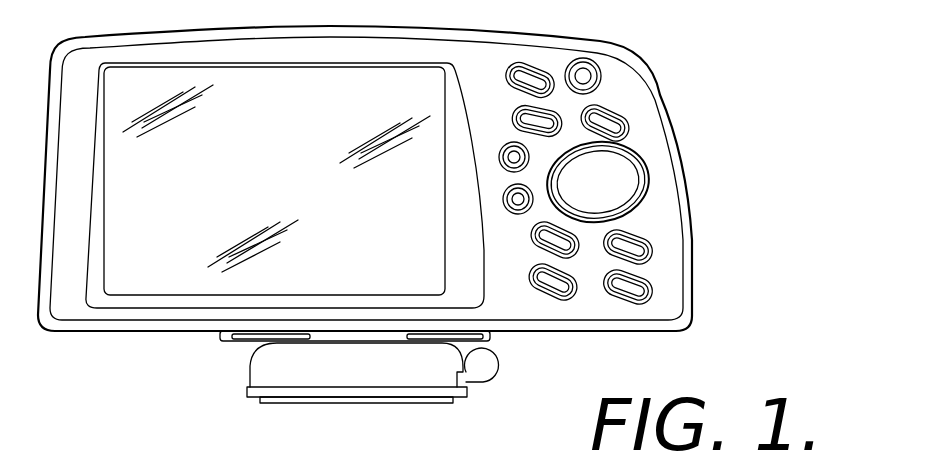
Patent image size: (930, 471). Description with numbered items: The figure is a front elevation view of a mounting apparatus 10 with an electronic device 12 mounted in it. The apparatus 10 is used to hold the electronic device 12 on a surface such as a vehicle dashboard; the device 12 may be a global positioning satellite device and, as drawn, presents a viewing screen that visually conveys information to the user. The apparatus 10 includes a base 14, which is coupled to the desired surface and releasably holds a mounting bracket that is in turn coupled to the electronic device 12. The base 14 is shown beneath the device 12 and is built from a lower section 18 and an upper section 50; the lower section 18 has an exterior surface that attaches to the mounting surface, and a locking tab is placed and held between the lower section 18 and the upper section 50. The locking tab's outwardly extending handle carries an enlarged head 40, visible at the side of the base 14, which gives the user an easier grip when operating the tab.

The mounting apparatus 10 is at (493, 343).
The electronic device 12 is at (686, 160).
The base 14 is at (253, 357).
The lower section 18 is at (468, 392).
The enlarged head 40 is at (506, 360).
The upper section 50 is at (248, 372).